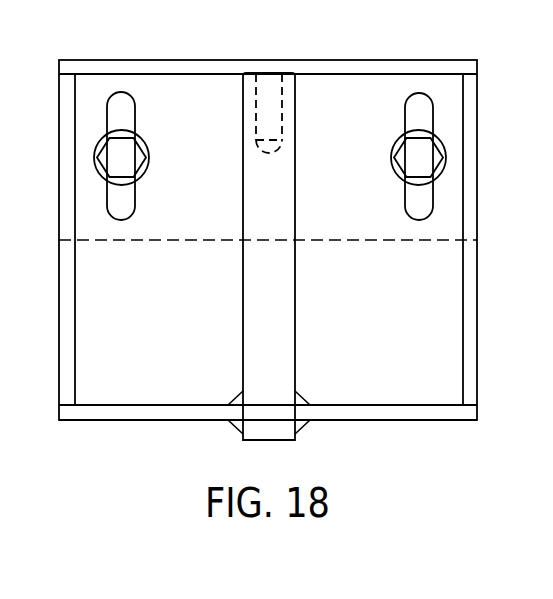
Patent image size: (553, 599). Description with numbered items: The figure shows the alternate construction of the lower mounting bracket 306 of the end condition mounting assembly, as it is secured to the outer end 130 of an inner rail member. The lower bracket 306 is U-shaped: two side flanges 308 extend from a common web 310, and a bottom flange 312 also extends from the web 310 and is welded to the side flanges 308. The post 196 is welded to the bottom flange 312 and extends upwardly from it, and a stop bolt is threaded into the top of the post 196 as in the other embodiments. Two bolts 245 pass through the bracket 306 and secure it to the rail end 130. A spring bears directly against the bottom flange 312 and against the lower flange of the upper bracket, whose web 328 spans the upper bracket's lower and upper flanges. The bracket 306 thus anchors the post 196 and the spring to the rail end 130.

The outer end 130 is at (452, 60).
The post 196 is at (297, 308).
The bolts 245 is at (128, 157).
The lower mounting bracket 306 is at (181, 424).
The side flanges 308 is at (66, 324).
The web 310 is at (362, 387).
The bottom flange 312 is at (157, 408).
The web 328 is at (215, 230).